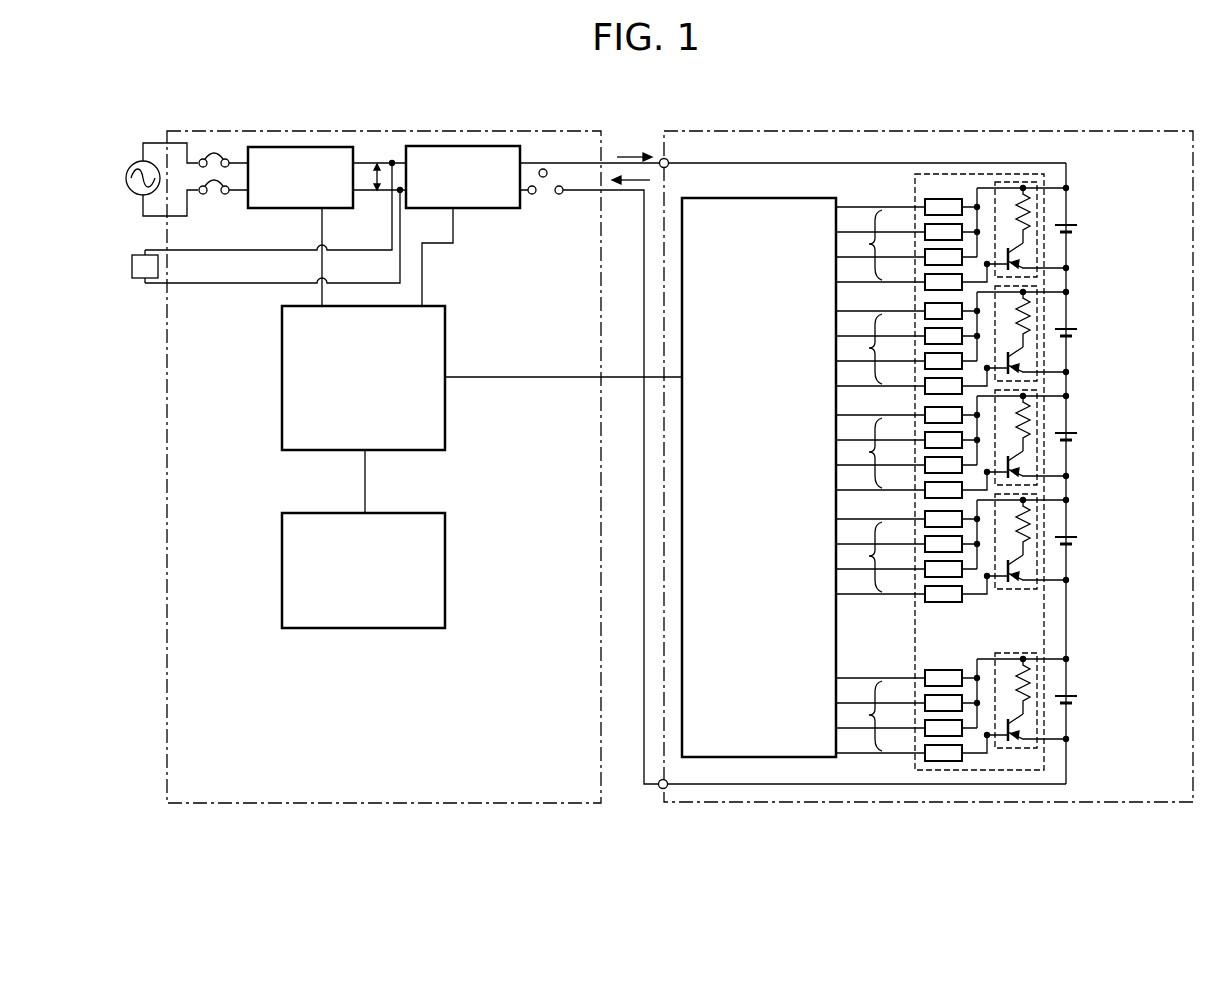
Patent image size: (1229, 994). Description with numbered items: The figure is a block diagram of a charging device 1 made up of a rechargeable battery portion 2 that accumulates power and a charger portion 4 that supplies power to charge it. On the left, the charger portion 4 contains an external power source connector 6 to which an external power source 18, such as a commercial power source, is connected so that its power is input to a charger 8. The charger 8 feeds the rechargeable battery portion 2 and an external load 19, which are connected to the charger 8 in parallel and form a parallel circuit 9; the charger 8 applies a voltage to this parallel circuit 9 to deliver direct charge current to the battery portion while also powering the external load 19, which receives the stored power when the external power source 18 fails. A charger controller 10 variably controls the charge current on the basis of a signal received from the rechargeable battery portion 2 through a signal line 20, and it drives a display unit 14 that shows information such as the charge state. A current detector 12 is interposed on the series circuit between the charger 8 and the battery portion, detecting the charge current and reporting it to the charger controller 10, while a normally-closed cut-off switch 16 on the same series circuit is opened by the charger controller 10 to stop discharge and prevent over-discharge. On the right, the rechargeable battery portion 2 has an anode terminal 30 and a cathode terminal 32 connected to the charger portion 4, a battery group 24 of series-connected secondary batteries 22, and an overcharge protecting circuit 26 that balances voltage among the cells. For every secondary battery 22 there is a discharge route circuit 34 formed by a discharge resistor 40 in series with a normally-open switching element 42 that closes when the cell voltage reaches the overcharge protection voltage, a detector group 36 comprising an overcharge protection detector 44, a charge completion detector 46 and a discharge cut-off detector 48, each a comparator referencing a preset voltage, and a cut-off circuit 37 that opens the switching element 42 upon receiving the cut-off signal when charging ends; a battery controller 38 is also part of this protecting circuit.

The charging device 1 is at (612, 97).
The rechargeable battery portion 2 is at (785, 131).
The charger portion 4 is at (271, 131).
The external power source connector 6 is at (214, 207).
The charger 8 is at (288, 209).
The parallel circuit 9 is at (214, 300).
The charger controller 10 is at (282, 371).
The current detector 12 is at (475, 209).
The display unit 14 is at (282, 566).
The cut-off switch 16 is at (547, 205).
The external power source 18 is at (125, 177).
The external load 19 is at (131, 265).
The signal line 20 is at (531, 377).
The secondary battery 22 is at (1088, 698).
The battery group 24 is at (1124, 254).
The overcharge protecting circuit 26 is at (913, 188).
The anode terminal 30 is at (669, 162).
The cathode terminal 32 is at (668, 783).
The discharge route circuit 34 is at (1082, 749).
The detector group 36 is at (952, 470).
The cut-off circuit 37 is at (925, 757).
The battery controller 38 is at (756, 198).
The discharge resistor 40 is at (1082, 675).
The switching element 42 is at (1082, 719).
The overcharge protection detector 44 is at (925, 732).
The charge completion detector 46 is at (925, 707).
The discharge cut-off detector 48 is at (925, 682).